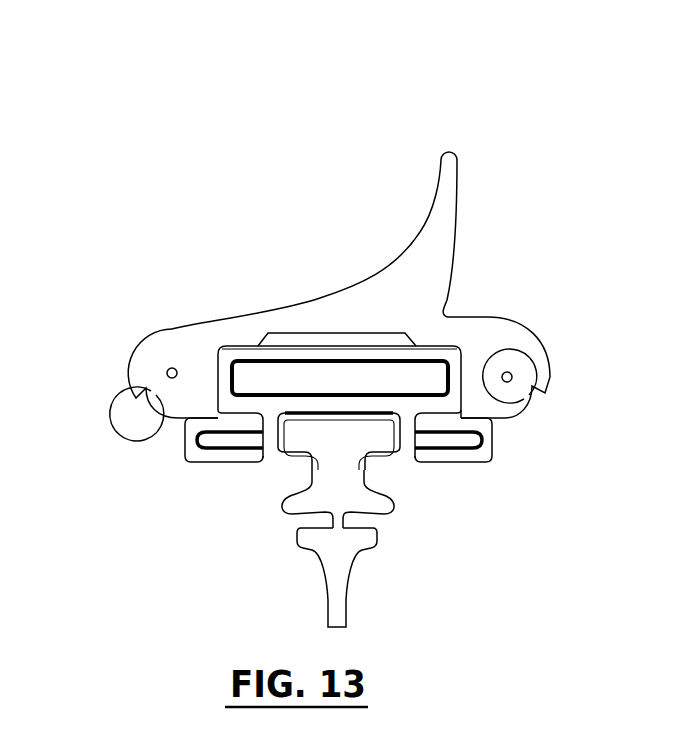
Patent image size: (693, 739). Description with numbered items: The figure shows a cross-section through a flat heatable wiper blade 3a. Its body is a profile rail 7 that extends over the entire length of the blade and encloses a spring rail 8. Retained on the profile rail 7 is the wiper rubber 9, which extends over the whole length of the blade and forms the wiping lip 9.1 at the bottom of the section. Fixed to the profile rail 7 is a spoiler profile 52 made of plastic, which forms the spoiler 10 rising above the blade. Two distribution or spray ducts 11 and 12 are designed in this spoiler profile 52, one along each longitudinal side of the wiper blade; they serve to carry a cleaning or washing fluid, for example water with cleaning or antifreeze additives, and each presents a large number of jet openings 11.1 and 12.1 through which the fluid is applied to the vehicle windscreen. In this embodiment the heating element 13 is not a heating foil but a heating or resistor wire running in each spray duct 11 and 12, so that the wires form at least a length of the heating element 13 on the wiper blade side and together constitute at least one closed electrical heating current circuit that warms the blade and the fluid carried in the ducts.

The flat wiper blade 3a is at (398, 140).
The spoiler profile 52 is at (400, 275).
The spoiler 10 is at (462, 210).
The spring rail 8 is at (377, 375).
The spray duct 11 is at (170, 352).
The spray duct 12 is at (510, 355).
The heating element 13 is at (168, 369).
The jet openings 11.1 is at (138, 407).
The jet openings 12.1 is at (537, 408).
The profile rail 7 is at (278, 462).
The wiper rubber 9 is at (392, 508).
The wiping lip 9.1 is at (340, 613).